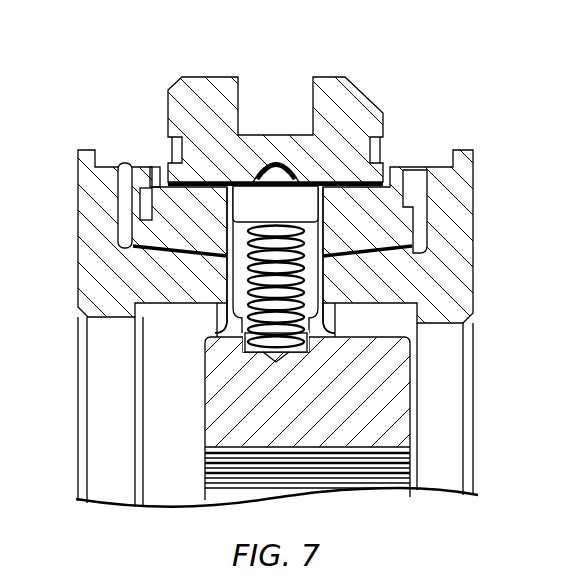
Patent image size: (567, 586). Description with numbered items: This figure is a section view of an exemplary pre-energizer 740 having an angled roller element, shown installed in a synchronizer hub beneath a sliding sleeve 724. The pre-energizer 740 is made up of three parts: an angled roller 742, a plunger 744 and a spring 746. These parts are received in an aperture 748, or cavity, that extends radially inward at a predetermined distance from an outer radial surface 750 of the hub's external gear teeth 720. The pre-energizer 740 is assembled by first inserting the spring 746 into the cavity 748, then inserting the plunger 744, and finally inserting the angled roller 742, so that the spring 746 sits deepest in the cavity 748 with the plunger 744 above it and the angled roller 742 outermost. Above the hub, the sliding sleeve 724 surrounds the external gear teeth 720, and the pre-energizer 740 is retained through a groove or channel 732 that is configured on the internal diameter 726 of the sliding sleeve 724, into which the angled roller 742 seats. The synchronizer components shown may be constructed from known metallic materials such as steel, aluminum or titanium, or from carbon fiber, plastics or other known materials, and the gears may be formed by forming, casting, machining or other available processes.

The external gear teeth 720 is at (158, 170).
The sliding sleeve 724 is at (338, 110).
The internal diameter 726 is at (330, 177).
The groove or channel 732 is at (278, 163).
The pre-energizer 740 is at (326, 352).
The angled roller 742 is at (135, 246).
The plunger 744 is at (250, 270).
The spring 746 is at (243, 308).
The aperture 748 is at (246, 211).
The outer radial surface 750 is at (403, 207).